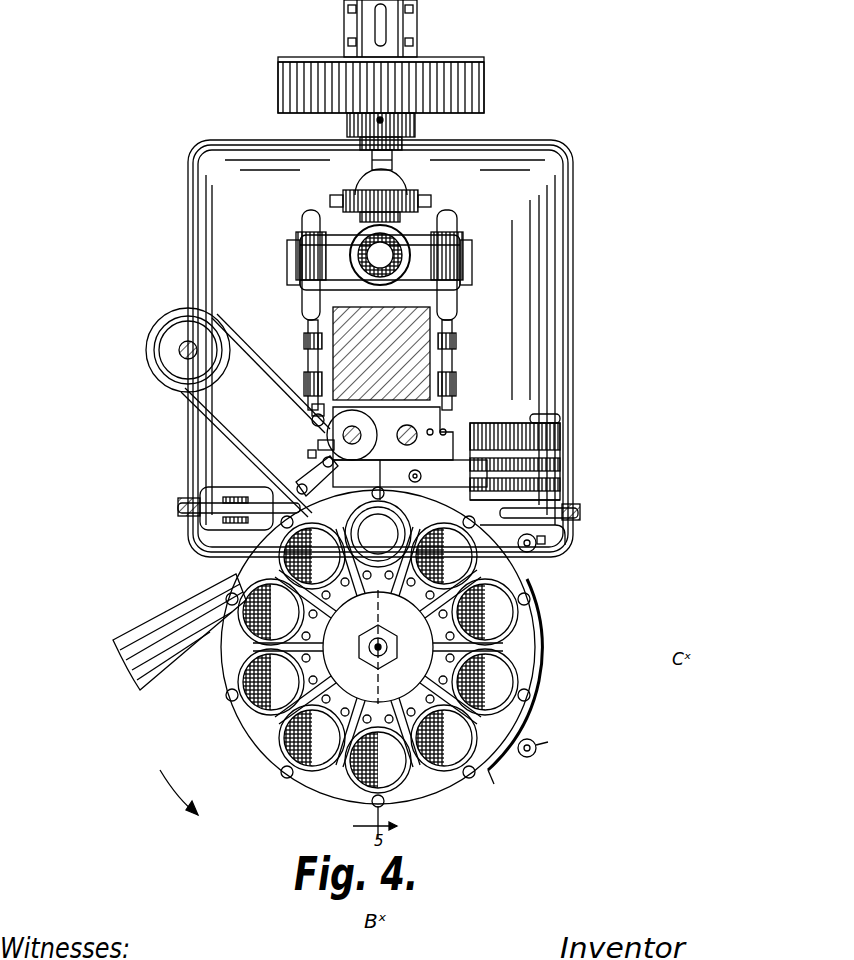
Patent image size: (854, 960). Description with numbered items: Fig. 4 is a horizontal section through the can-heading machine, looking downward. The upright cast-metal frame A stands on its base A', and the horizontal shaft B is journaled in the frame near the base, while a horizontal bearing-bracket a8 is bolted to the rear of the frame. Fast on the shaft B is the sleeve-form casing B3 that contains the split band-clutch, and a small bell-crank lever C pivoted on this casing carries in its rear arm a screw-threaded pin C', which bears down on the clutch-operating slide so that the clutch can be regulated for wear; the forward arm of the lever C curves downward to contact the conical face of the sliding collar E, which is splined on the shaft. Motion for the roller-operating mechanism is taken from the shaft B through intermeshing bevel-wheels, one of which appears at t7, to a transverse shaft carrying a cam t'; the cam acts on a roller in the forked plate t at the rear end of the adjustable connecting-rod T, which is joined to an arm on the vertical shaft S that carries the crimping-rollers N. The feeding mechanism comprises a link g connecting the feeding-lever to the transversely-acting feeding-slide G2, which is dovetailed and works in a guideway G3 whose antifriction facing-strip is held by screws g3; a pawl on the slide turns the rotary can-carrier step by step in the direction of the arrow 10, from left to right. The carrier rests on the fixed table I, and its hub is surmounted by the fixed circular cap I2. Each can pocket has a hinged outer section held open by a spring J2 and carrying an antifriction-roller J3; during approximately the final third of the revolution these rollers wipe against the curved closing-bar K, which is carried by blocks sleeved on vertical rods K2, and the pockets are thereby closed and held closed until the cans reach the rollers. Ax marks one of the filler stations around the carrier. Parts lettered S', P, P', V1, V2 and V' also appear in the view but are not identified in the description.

The base A' is at (408, 348).
The horizontal shaft B is at (484, 90).
The screw-threaded pin C' is at (352, 125).
The sleeve-form casing B3 is at (360, 140).
The bell-crank lever C is at (355, 153).
The sliding collar E is at (352, 192).
The bevel-wheel t7 is at (352, 238).
The plate t is at (289, 261).
The cam t' is at (468, 260).
The horizontal bearing-bracket a8 is at (314, 318).
The adjustable connecting-rod T is at (456, 362).
The frame A is at (407, 353).
The guideway G3 is at (440, 432).
The disk S' is at (361, 435).
The vertical shaft S is at (407, 424).
The screws g3 is at (430, 430).
The feeding-slide G2 is at (410, 470).
The link g is at (560, 440).
The pulley P is at (179, 360).
The belt P' is at (238, 400).
The solenoid V1 is at (225, 520).
The lever V2 is at (180, 510).
The crimping-rollers N is at (300, 470).
The closing-bar K is at (535, 640).
The circular cap I2 is at (378, 647).
The table I is at (425, 520).
The antifriction-roller J3 is at (500, 560).
The spring J2 is at (378, 647).
The right lever V' is at (564, 516).
The vertical rods K2 is at (605, 562).
The filler station Ax is at (122, 645).
The arrow 10 is at (173, 792).